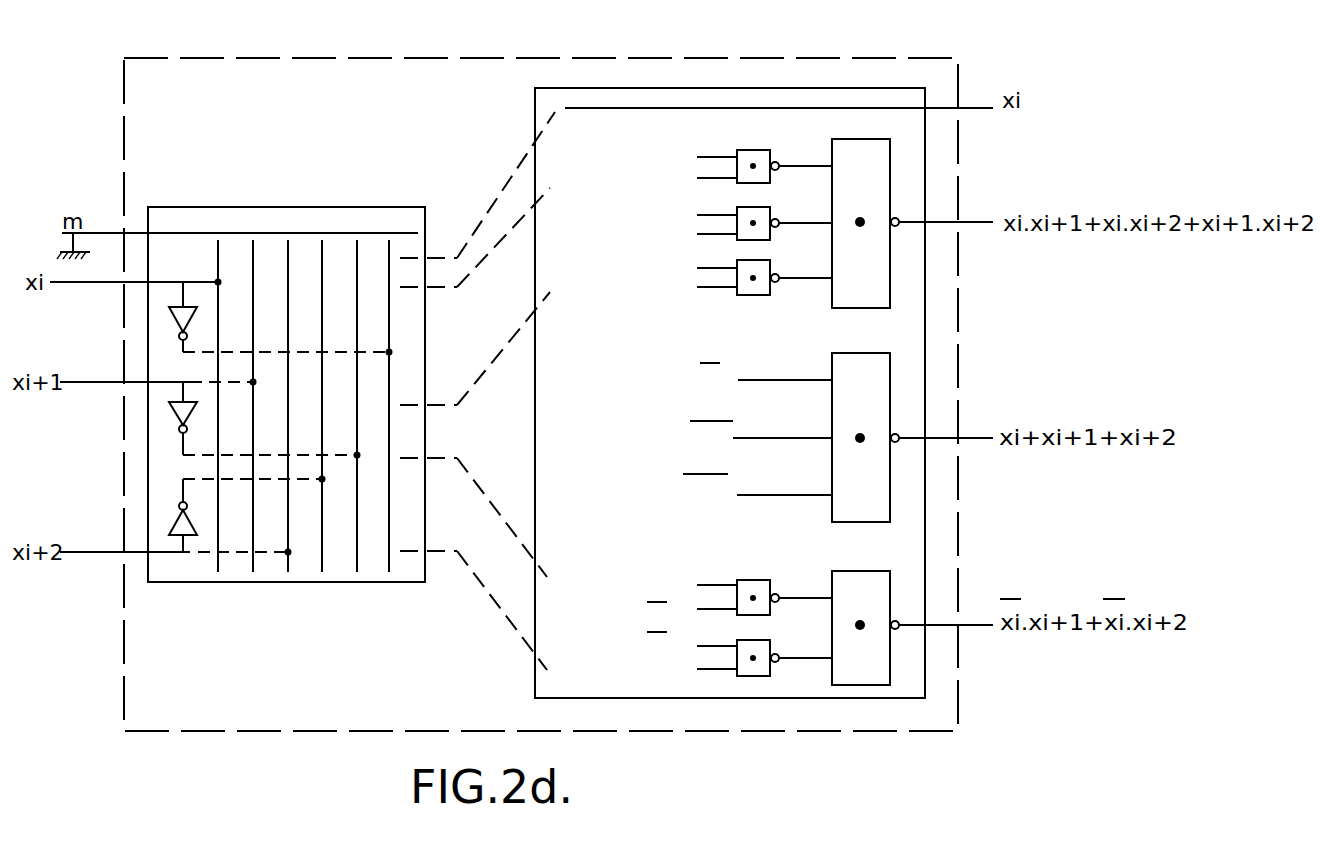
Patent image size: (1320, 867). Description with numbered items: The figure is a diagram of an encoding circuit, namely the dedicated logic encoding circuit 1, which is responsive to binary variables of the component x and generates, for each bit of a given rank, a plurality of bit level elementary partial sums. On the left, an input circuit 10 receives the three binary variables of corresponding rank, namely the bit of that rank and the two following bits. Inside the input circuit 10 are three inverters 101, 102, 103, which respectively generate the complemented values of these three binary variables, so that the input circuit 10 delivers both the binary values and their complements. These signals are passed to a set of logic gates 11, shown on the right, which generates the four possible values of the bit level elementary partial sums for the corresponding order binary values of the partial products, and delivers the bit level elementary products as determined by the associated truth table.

The dedicated logic encoding circuit 1 is at (443, 75).
The input circuit 10 is at (345, 222).
The logic gates 11 is at (550, 160).
The inverter 101 is at (170, 313).
The inverter 102 is at (178, 410).
The inverter 103 is at (178, 525).